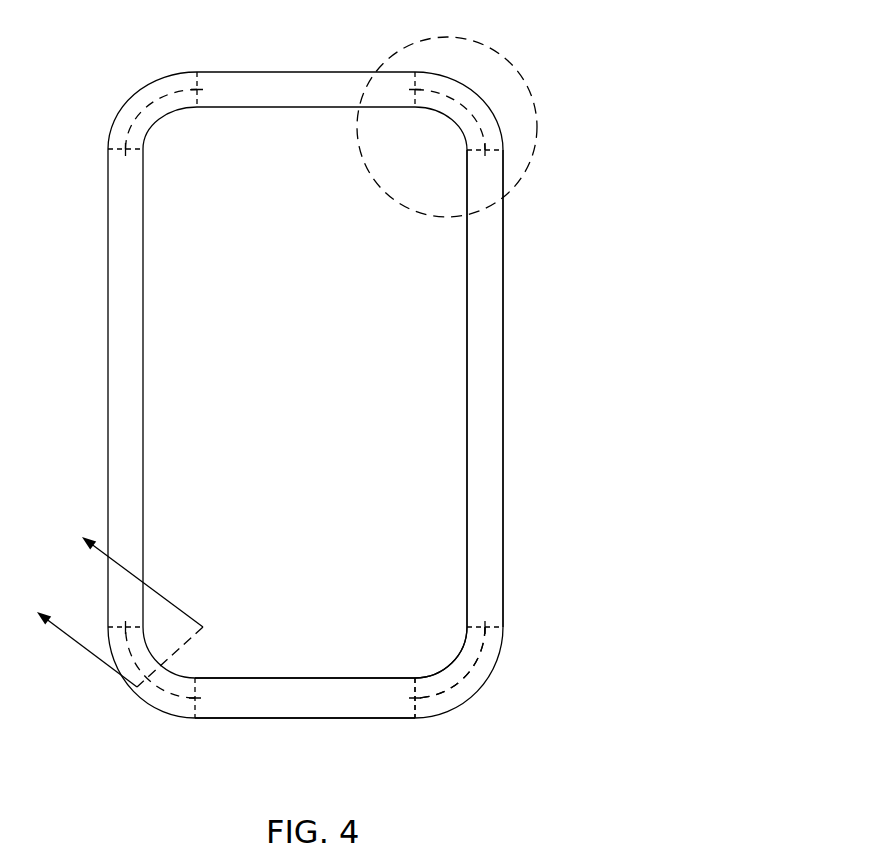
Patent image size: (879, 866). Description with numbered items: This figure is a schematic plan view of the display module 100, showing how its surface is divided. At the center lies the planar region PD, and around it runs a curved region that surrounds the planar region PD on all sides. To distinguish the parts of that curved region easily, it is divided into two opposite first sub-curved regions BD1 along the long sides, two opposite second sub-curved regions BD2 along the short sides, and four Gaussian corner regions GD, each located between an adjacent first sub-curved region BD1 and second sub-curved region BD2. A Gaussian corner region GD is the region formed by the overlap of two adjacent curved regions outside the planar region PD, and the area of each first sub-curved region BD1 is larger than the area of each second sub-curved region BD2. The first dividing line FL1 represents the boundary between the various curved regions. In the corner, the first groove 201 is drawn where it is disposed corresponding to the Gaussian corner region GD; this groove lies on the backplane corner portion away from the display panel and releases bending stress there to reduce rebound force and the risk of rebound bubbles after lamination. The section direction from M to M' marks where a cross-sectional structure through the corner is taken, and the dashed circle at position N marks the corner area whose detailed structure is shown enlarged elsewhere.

The display module 100 is at (186, 51).
The planar region PD is at (433, 455).
The position N is at (526, 172).
The first sub-curved region BD1 is at (488, 510).
The second sub-curved region BD2 is at (303, 700).
The first dividing line FL1 is at (416, 704).
The Gaussian corner region GD is at (463, 683).
The first groove 201 is at (467, 667).
The M-M' direction M is at (116, 636).
The M-M' direction M' is at (131, 572).